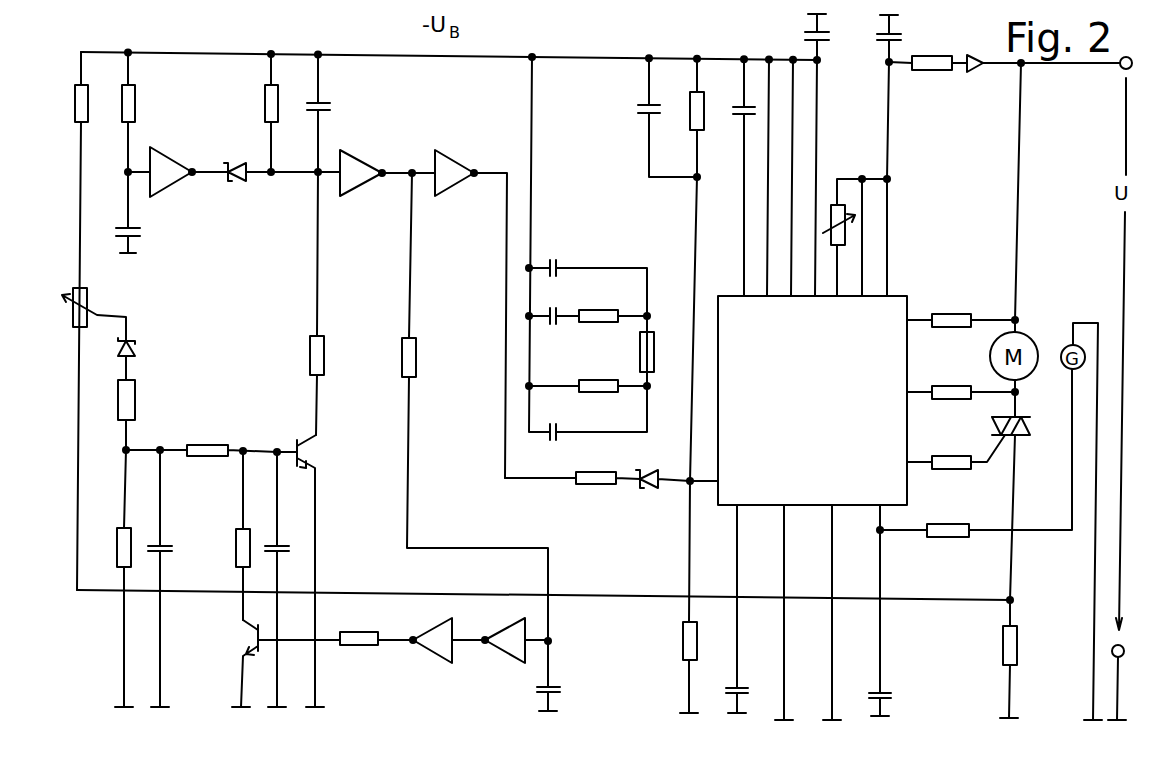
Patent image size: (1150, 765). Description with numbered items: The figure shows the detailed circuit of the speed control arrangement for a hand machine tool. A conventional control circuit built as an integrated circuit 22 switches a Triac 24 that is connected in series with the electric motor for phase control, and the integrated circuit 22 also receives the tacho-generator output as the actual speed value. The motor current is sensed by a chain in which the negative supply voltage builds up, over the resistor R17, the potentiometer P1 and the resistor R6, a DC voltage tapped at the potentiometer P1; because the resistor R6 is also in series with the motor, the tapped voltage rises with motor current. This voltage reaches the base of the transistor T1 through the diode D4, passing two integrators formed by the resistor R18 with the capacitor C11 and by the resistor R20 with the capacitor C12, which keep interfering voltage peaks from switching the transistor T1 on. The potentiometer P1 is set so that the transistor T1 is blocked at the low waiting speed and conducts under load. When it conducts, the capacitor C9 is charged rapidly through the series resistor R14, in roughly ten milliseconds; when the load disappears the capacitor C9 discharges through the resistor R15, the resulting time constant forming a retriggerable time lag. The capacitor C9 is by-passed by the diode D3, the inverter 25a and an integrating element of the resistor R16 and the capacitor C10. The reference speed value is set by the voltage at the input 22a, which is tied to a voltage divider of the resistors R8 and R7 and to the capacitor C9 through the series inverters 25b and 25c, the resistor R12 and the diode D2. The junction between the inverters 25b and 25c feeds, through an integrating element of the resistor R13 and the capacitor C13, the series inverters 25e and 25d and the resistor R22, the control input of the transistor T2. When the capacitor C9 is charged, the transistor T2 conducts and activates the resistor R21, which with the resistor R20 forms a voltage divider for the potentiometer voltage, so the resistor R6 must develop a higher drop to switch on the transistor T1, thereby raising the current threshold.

The resistor R17 is at (75, 103).
The resistor R16 is at (135, 105).
The resistor R15 is at (266, 105).
The capacitor C9 is at (322, 101).
The capacitor C10 is at (134, 226).
The inverter 25a is at (168, 162).
The diode D3 is at (234, 161).
The inverter 25b is at (360, 162).
The inverter 25c is at (452, 163).
The resistor R13 is at (404, 352).
The series resistor R14 is at (309, 352).
The transistor T1 is at (308, 457).
The potentiometer P1 is at (72, 318).
The diode D4 is at (137, 342).
The resistor R18 is at (135, 404).
The resistor R20 is at (206, 445).
The capacitor C11 is at (166, 549).
The resistor R21 is at (238, 544).
The transistor T2 is at (255, 640).
The capacitor C12 is at (280, 549).
The resistor R22 is at (360, 646).
The inverter 25d is at (434, 650).
The inverter 25e is at (502, 652).
The capacitor C13 is at (554, 685).
The resistor R12 is at (600, 474).
The diode D2 is at (649, 476).
The resistor R8 is at (690, 106).
The resistor R7 is at (683, 641).
The integrated circuit 22 is at (834, 298).
The input 22a is at (719, 481).
The Triac 24 is at (1029, 428).
The resistor R6 is at (1003, 640).